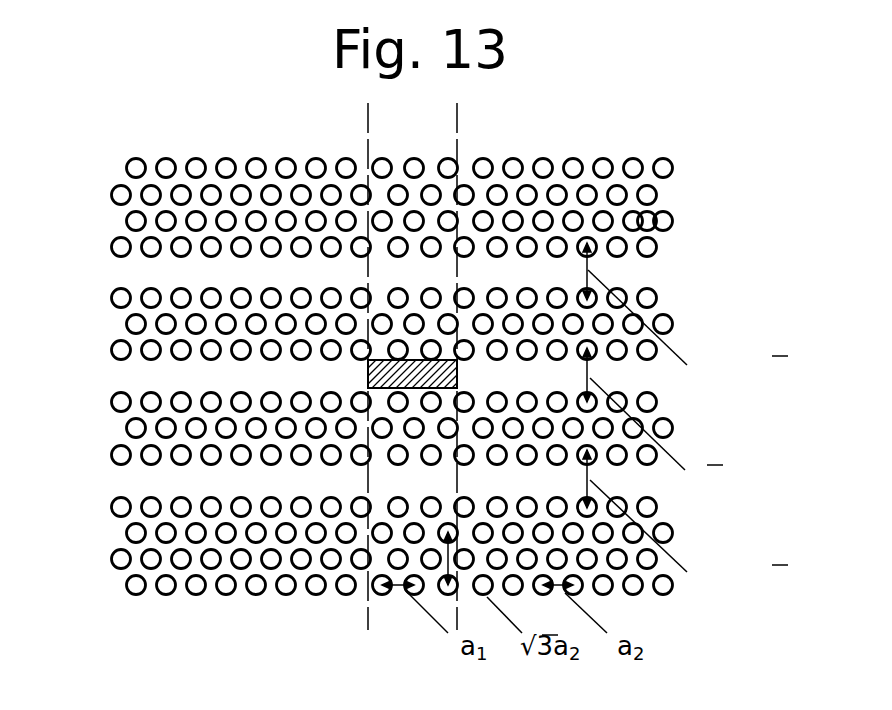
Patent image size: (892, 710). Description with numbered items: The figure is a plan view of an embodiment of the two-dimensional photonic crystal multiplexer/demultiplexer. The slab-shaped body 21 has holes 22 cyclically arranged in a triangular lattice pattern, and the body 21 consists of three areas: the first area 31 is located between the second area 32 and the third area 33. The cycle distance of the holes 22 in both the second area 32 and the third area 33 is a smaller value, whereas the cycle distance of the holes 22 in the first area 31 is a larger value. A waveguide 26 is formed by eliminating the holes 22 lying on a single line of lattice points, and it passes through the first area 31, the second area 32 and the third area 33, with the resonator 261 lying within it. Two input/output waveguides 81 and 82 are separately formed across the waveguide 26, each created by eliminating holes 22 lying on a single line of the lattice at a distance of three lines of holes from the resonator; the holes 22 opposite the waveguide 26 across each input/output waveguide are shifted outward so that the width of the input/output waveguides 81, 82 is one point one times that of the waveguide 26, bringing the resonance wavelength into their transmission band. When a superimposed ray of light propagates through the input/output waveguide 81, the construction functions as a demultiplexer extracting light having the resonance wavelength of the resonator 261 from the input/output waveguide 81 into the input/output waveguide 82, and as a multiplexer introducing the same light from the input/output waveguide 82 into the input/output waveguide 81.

The body 21 is at (647, 212).
The hole 22 is at (409, 366).
The waveguide 26 is at (147, 373).
The resonator 261 is at (422, 375).
The first area 31 is at (457, 137).
The second area 32 is at (368, 137).
The third area 33 is at (670, 137).
The input/output waveguide 81 is at (147, 478).
The input/output waveguide 82 is at (147, 277).